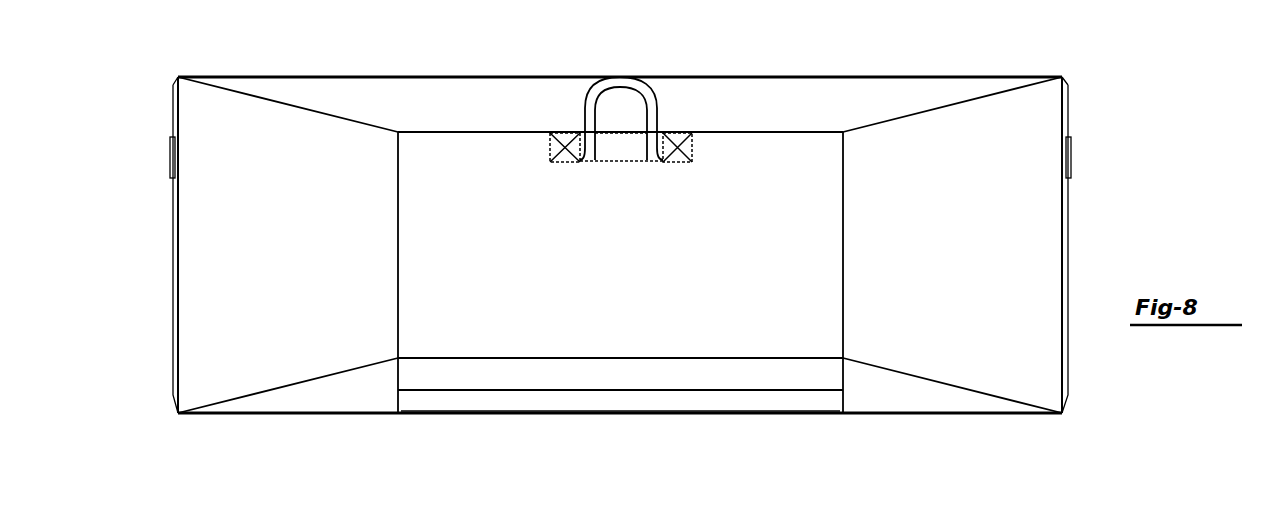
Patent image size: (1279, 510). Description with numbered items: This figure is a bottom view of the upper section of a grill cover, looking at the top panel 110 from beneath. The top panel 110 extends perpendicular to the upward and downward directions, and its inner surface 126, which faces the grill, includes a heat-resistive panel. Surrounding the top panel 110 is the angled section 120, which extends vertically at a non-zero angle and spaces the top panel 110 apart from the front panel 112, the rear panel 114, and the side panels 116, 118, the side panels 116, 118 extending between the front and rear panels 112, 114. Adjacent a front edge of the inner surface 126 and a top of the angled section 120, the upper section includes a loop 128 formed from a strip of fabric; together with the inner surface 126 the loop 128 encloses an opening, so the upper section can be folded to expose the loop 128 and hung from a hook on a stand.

The top panel 110 is at (540, 328).
The front panel 112 is at (828, 77).
The rear panel 114 is at (787, 414).
The side panel 116 is at (177, 284).
The side panel 118 is at (1068, 195).
The angled section 120 is at (362, 110).
The inner surface 126 is at (634, 265).
The loop 128 is at (668, 103).